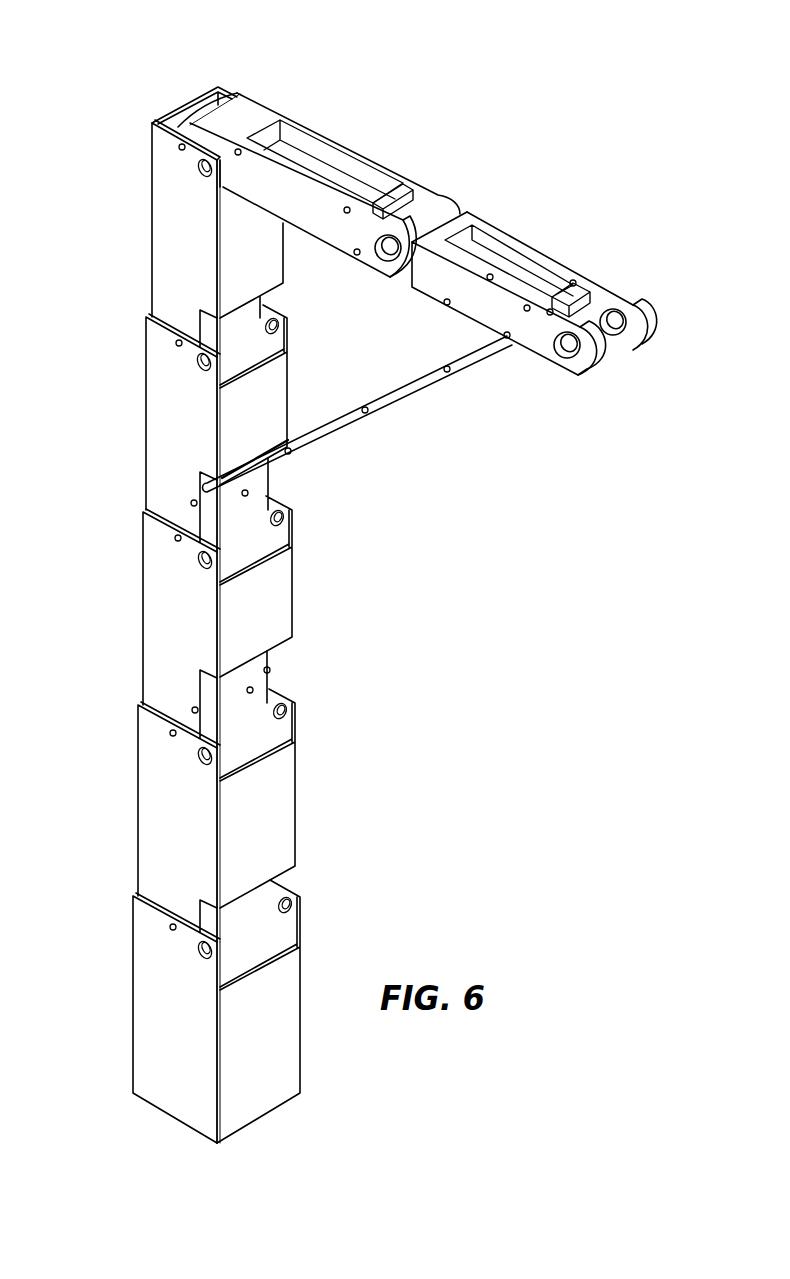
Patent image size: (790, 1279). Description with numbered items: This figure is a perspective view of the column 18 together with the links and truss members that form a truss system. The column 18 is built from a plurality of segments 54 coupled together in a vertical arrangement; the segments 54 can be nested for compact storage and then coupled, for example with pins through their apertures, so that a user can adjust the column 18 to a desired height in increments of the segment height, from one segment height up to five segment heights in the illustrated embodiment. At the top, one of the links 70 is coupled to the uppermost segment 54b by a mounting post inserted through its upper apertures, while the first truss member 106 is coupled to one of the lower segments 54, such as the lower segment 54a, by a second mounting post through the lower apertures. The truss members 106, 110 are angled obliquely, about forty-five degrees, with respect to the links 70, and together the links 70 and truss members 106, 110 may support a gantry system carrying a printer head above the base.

The column 18 is at (149, 71).
The uppermost segment 54b is at (185, 293).
The segment 54 is at (177, 415).
The lower segment 54a is at (185, 1032).
The link 70 is at (416, 170).
The first truss member 106 is at (326, 433).
The truss member 110 is at (417, 380).